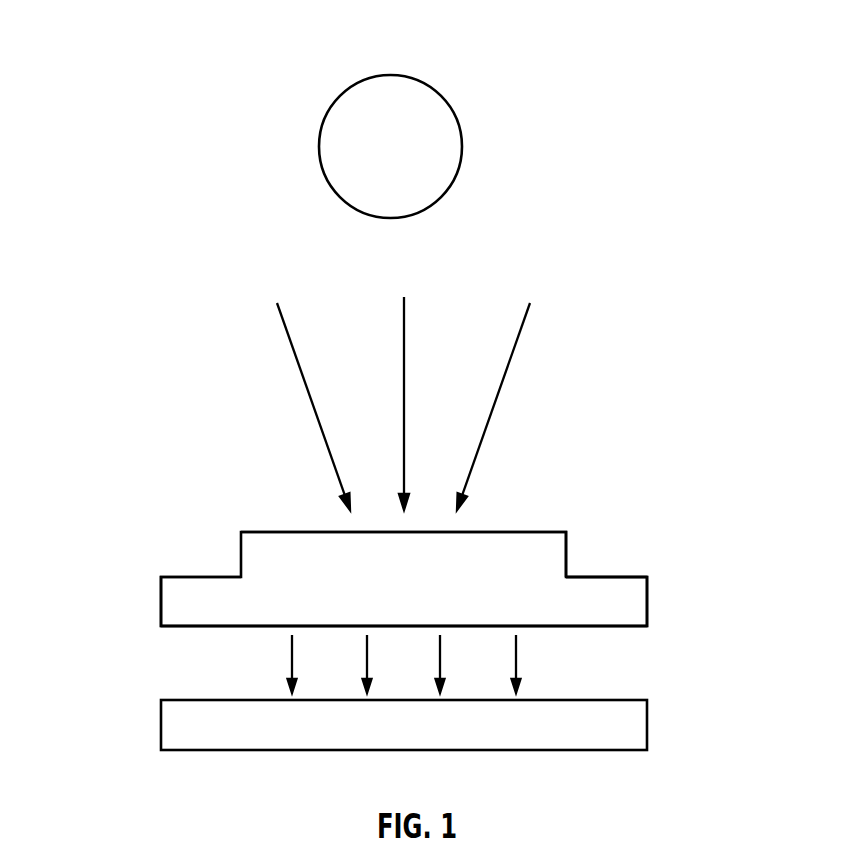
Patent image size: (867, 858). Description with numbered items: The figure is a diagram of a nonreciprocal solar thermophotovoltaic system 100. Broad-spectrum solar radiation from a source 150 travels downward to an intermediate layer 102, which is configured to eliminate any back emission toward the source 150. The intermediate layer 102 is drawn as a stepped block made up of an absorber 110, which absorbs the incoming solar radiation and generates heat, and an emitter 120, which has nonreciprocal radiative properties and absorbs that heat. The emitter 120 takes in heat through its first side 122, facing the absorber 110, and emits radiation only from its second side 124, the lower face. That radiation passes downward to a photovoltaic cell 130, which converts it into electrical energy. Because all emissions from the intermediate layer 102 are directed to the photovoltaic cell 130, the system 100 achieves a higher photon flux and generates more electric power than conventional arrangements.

The nonreciprocal solar thermophotovoltaic system 100 is at (116, 33).
The intermediate layer 102 is at (141, 560).
The absorber 110 is at (568, 540).
The emitter 120 is at (647, 605).
The first side of the emitter 122 is at (627, 573).
The second side of the emitter 124 is at (617, 627).
The photovoltaic cell 130 is at (647, 735).
The source of broad-spectrum solar radiation 150 is at (463, 147).